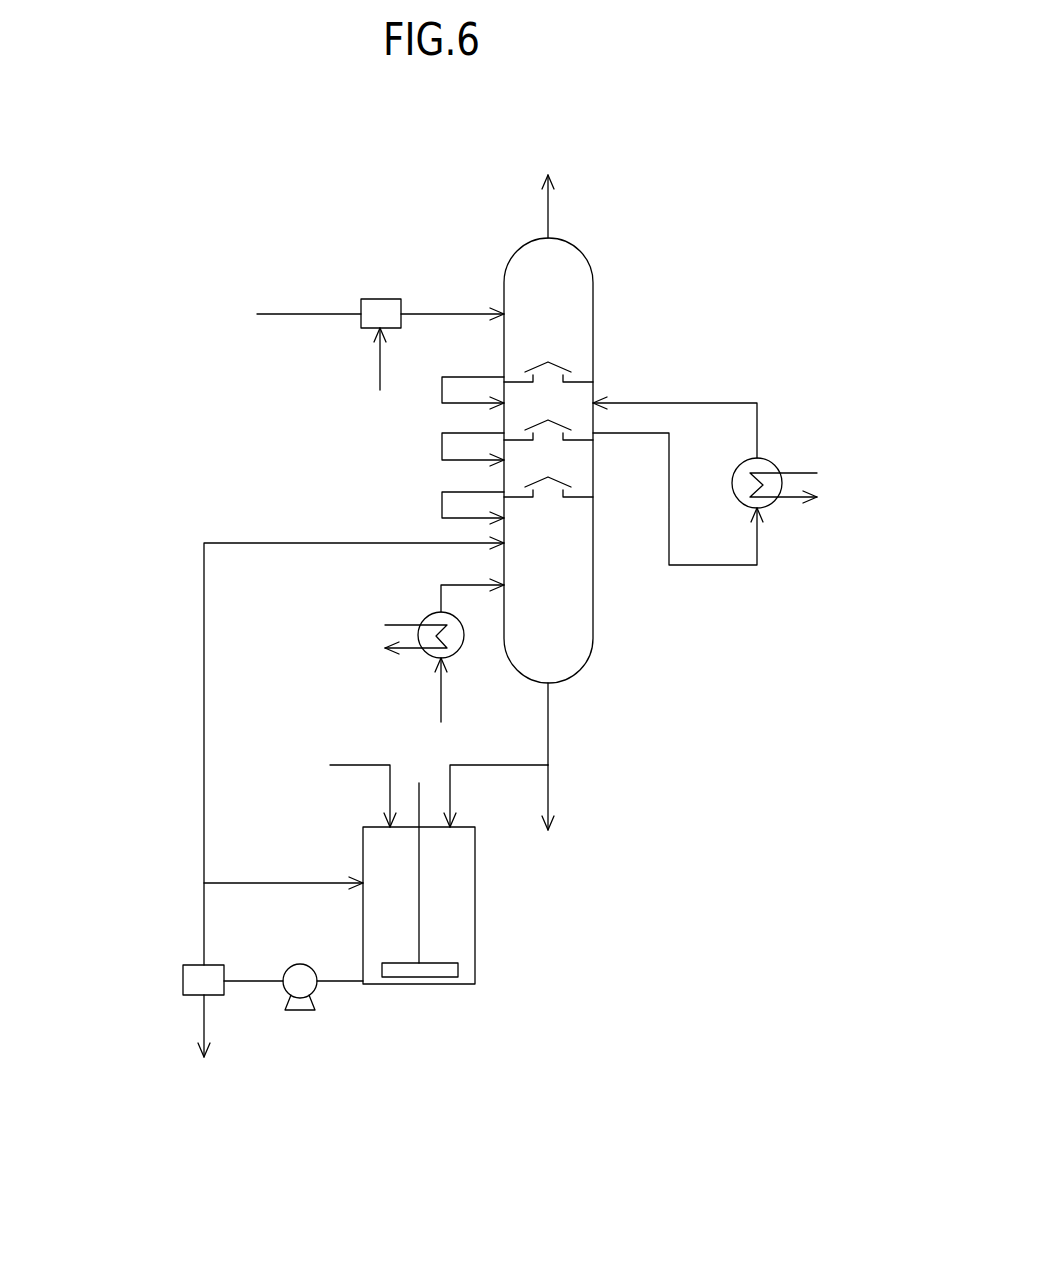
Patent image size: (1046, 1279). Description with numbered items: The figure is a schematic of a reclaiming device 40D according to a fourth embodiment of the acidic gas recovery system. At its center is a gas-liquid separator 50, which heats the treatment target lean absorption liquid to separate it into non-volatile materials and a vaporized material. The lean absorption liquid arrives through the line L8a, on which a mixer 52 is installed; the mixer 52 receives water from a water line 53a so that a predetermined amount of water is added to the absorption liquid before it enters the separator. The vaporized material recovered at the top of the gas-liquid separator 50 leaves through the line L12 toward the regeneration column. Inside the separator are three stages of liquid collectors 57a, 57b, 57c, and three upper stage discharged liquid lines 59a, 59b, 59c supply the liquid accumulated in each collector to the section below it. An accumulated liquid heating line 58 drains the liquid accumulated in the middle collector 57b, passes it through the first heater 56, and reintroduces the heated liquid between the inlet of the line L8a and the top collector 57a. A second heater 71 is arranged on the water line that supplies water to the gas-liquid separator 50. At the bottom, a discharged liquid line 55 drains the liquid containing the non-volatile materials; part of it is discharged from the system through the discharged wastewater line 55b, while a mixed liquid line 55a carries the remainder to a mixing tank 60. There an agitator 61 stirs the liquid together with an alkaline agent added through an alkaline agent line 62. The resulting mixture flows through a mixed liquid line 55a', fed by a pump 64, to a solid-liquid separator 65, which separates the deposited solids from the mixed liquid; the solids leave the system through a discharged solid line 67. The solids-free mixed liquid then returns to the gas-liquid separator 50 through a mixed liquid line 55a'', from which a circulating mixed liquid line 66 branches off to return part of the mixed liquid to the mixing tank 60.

The reclaiming device 40D is at (675, 208).
The gas-liquid separator 50 is at (593, 592).
The line L12 is at (550, 220).
The line L8a is at (318, 313).
The mixer 52 is at (380, 299).
The water line 53a is at (372, 370).
The liquid collector 57a is at (577, 380).
The liquid collector 57b is at (577, 438).
The liquid collector 57c is at (577, 495).
The upper stage discharged liquid line 59a is at (442, 389).
The upper stage discharged liquid line 59b is at (442, 446).
The upper stage discharged liquid line 59c is at (442, 502).
The accumulated liquid heating line 58 is at (718, 403).
The first heater 56 is at (770, 460).
The second heater 71 is at (425, 614).
The discharged liquid line 55 is at (548, 718).
The discharged wastewater line 55b is at (550, 792).
The mixed liquid line 55a is at (496, 823).
The alkaline agent line 62 is at (352, 763).
The mixing tank 60 is at (475, 902).
The agitator 61 is at (413, 793).
The circulating mixed liquid line 66 is at (280, 883).
The mixed liquid line 55a'' is at (293, 751).
The solid-liquid separator 65 is at (183, 982).
The discharged solid line 67 is at (203, 1020).
The mixed liquid line 55a' is at (293, 1026).
The pump 64 is at (298, 1012).